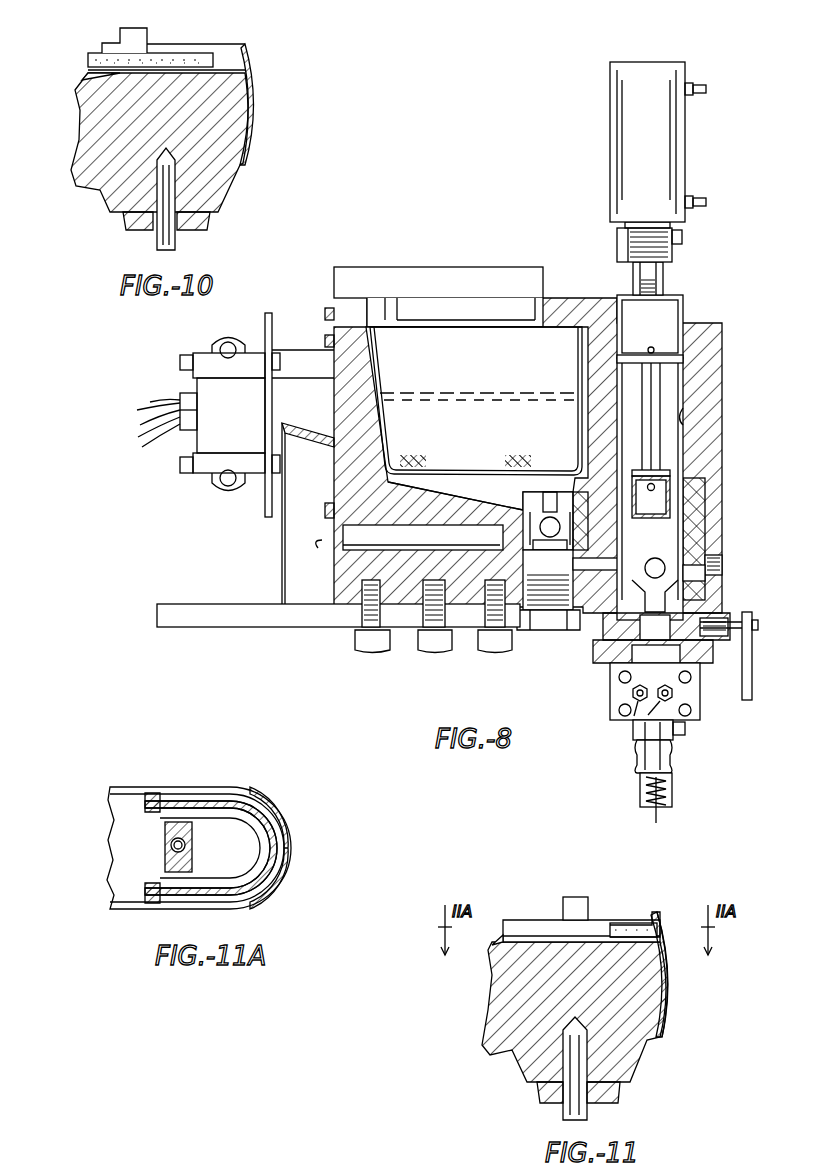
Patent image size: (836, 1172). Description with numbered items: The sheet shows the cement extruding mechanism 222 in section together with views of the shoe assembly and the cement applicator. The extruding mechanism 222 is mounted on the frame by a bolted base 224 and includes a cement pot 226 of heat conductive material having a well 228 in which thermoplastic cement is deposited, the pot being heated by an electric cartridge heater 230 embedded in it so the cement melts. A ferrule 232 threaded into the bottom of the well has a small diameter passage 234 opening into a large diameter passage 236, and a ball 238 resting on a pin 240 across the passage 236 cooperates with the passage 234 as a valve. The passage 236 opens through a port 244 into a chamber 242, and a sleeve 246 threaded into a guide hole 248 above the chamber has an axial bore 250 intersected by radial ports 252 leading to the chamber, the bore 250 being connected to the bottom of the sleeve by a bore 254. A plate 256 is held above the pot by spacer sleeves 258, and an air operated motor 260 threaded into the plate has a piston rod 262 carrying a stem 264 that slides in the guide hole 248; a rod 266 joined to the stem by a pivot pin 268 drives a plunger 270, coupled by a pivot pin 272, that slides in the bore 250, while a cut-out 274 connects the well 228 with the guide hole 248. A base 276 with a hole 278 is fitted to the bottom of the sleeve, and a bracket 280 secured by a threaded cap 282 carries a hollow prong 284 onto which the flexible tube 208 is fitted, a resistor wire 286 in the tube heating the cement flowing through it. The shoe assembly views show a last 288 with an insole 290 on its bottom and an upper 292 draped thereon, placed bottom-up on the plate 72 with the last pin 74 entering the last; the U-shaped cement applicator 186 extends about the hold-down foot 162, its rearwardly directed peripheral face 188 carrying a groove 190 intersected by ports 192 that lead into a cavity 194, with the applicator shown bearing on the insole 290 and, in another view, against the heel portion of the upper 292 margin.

In FIG. 10, the plate 72 is at (136, 229).
In FIG. 11, the plate 72 is at (605, 1095).
In FIG. 10, the last pin 74 is at (170, 233).
In FIG. 11, the last pin 74 is at (577, 1105).
In FIG. 11A, the hold-down foot 162 is at (166, 838).
In FIG. 11, the hold-down foot 162 is at (565, 905).
In FIG. 10, the cement applicator 186 is at (102, 50).
In FIG. 11, the cement applicator 186 is at (620, 925).
In FIG. 11, the peripheral face 188 is at (655, 915).
In FIG. 11A, the groove 190 is at (262, 802).
In FIG. 11, the groove 190 is at (665, 935).
In FIG. 11A, the ports 192 is at (228, 797).
In FIG. 11A, the cavity 194 is at (276, 848).
In FIG. 8, the flexible tube 208 is at (675, 790).
In FIG. 8, the extruding mechanism 222 is at (474, 253).
In FIG. 8, the base 224 is at (222, 615).
In FIG. 8, the cement pot 226 is at (355, 345).
In FIG. 8, the well 228 is at (522, 345).
In FIG. 8, the electric cartridge heater 230 is at (383, 545).
In FIG. 8, the ferrule 232 is at (553, 515).
In FIG. 8, the small diameter passage 234 is at (545, 505).
In FIG. 8, the large diameter passage 236 is at (582, 512).
In FIG. 8, the ball 238 is at (520, 505).
In FIG. 8, the pin 240 is at (548, 590).
In FIG. 8, the chamber 242 is at (600, 595).
In FIG. 8, the port 244 is at (658, 560).
In FIG. 8, the sleeve 246 is at (692, 522).
In FIG. 8, the guide hole 248 is at (684, 420).
In FIG. 8, the axial bore 250 is at (692, 552).
In FIG. 8, the radial ports 252 is at (698, 577).
In FIG. 8, the bore 254 is at (667, 612).
In FIG. 8, the plate 256 is at (685, 240).
In FIG. 8, the spacer sleeves 258 is at (662, 287).
In FIG. 8, the air operated motor 260 is at (630, 140).
In FIG. 8, the piston rod 262 is at (648, 275).
In FIG. 8, the stem 264 is at (655, 315).
In FIG. 8, the rod 266 is at (648, 385).
In FIG. 8, the pivot pin 268 is at (648, 350).
In FIG. 8, the plunger 270 is at (660, 500).
In FIG. 8, the pivot pin 272 is at (656, 487).
In FIG. 8, the cut-out 274 is at (595, 405).
In FIG. 8, the base 276 is at (698, 655).
In FIG. 8, the hole 278 is at (655, 703).
In FIG. 8, the bracket 280 is at (612, 697).
In FIG. 8, the threaded cap 282 is at (598, 652).
In FIG. 8, the hollow prong 284 is at (662, 760).
In FIG. 8, the resistor wire 286 is at (656, 815).
In FIG. 10, the last 288 is at (100, 142).
In FIG. 11, the last 288 is at (515, 1005).
In FIG. 10, the insole 290 is at (88, 78).
In FIG. 11A, the insole 290 is at (126, 874).
In FIG. 11, the insole 290 is at (502, 942).
In FIG. 10, the upper 292 is at (250, 60).
In FIG. 11A, the upper 292 is at (136, 790).
In FIG. 11, the upper 292 is at (672, 990).